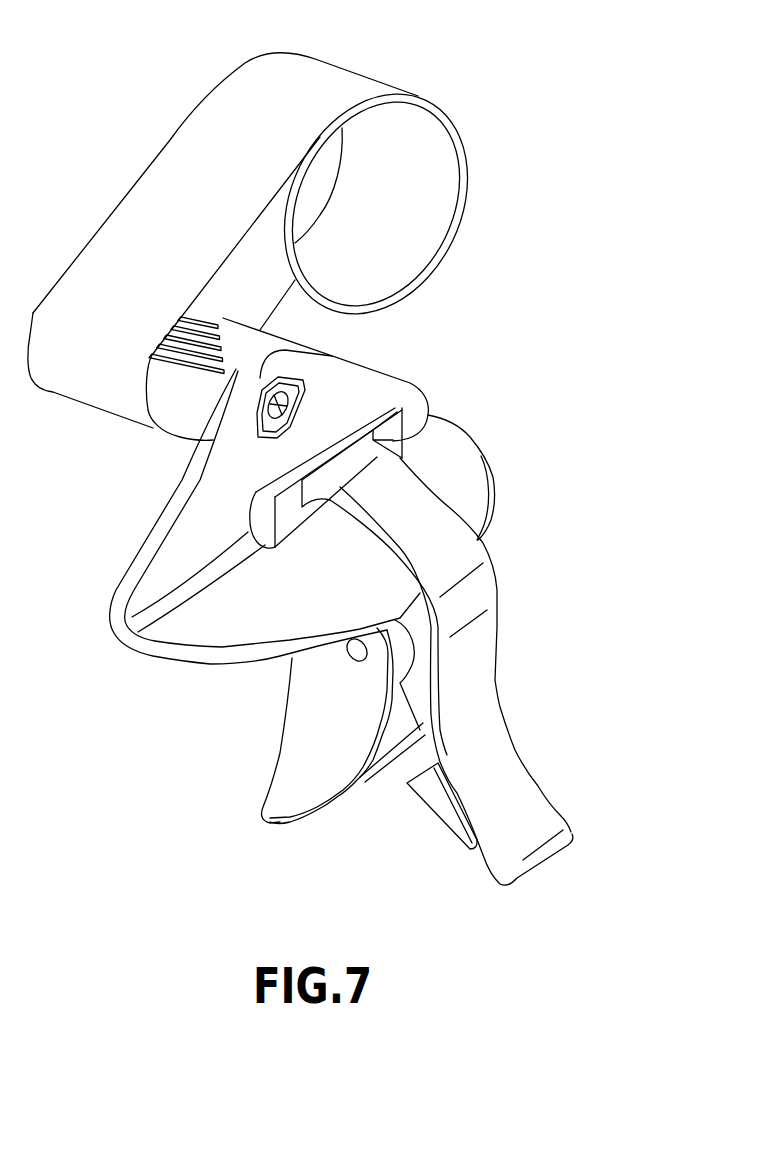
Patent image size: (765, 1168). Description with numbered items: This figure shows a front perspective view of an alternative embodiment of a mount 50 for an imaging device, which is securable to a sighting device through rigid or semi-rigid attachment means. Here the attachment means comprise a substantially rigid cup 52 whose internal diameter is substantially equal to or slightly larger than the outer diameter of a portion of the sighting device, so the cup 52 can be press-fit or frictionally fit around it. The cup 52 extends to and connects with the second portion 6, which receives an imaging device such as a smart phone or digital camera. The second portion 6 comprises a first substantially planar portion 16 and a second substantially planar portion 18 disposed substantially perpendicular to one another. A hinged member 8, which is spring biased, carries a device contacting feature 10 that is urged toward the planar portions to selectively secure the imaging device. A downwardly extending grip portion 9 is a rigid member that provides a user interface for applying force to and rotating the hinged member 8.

The mount 50 is at (616, 63).
The cup 52 is at (342, 80).
The second substantially planar portion 18 is at (375, 395).
The device contacting feature 10 is at (395, 442).
The first substantially planar portion 16 is at (483, 485).
The hinged member 8 is at (530, 813).
The grip portion 9 is at (285, 780).
The second portion 6 is at (143, 663).